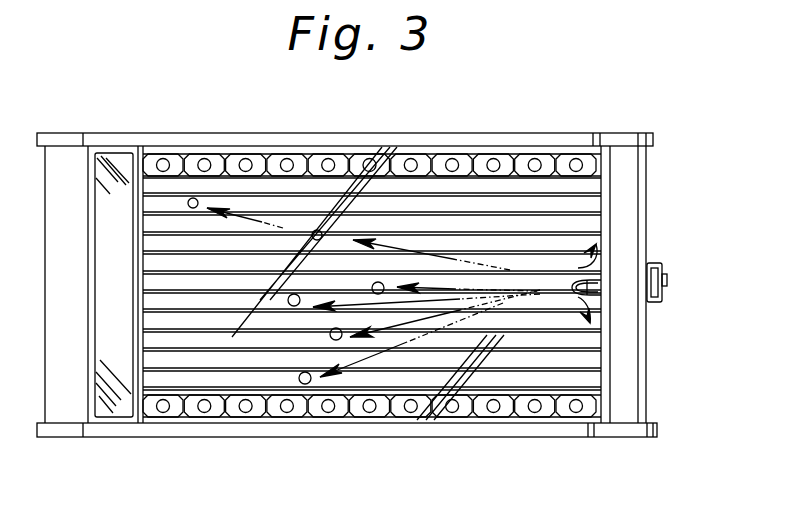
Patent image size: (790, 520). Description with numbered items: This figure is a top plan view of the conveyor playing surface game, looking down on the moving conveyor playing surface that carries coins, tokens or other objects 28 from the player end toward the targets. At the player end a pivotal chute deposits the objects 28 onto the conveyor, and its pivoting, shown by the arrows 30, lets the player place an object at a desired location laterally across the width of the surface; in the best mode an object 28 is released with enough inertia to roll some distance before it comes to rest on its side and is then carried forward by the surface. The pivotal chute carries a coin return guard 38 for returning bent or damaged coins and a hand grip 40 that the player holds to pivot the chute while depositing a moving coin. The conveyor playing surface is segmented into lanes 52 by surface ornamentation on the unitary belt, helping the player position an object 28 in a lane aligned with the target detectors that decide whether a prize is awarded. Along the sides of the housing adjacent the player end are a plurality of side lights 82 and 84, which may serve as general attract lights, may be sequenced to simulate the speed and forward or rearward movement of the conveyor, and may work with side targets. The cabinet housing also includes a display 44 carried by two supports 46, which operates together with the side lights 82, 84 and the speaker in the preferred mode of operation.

The coins, tokens or other objects 28 is at (193, 198).
The arrows 30 is at (598, 262).
The coin return guard 38 is at (667, 280).
The hand grip 40 is at (652, 302).
The display 44 is at (118, 372).
The supports 46 is at (63, 143).
The lanes 52 is at (565, 247).
The side lights 82 is at (532, 412).
The side lights 84 is at (368, 163).